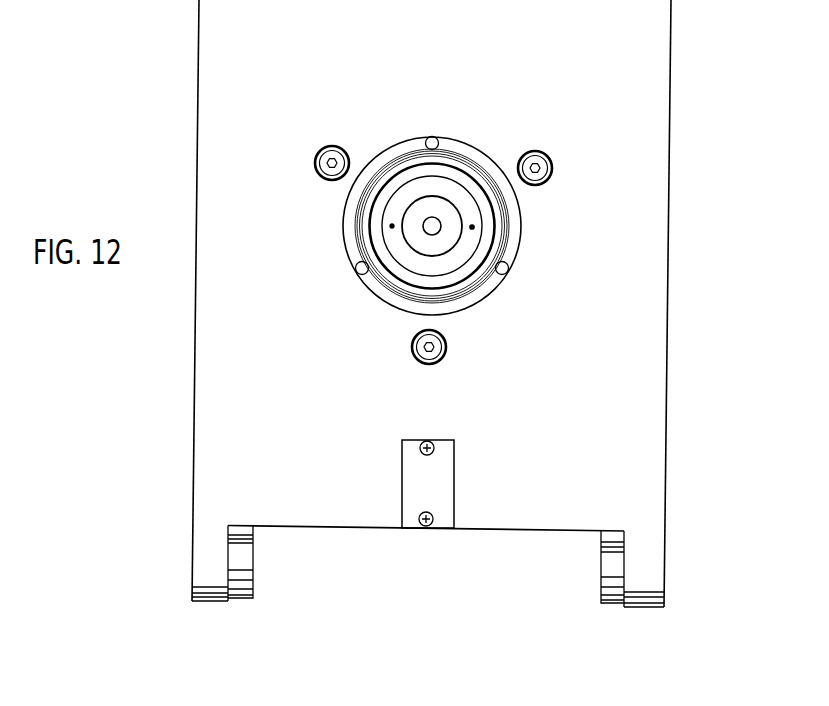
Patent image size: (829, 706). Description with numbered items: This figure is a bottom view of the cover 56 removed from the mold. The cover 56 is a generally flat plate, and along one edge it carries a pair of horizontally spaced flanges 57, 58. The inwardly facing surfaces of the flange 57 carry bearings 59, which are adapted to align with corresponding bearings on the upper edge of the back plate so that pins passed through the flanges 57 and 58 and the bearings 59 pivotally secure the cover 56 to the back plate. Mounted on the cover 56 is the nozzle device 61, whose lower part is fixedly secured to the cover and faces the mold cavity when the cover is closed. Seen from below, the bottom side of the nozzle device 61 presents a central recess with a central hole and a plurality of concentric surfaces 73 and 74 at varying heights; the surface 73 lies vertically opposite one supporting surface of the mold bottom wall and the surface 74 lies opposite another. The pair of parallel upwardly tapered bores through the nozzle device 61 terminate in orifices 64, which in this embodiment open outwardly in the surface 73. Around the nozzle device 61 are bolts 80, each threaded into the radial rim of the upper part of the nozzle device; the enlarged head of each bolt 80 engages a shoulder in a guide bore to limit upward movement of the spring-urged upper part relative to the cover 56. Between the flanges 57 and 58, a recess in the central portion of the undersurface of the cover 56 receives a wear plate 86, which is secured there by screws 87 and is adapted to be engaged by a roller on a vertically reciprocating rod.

The cover 56 is at (672, 380).
The flange 57 is at (198, 567).
The flange 58 is at (647, 572).
The bearings 59 is at (245, 562).
The nozzle device 61 is at (374, 304).
The orifices 64 is at (391, 226).
The surface 73 is at (473, 210).
The surface 74 is at (464, 165).
The bolt 80 is at (333, 160).
The wear plate 86 is at (443, 480).
The screws 87 is at (425, 441).